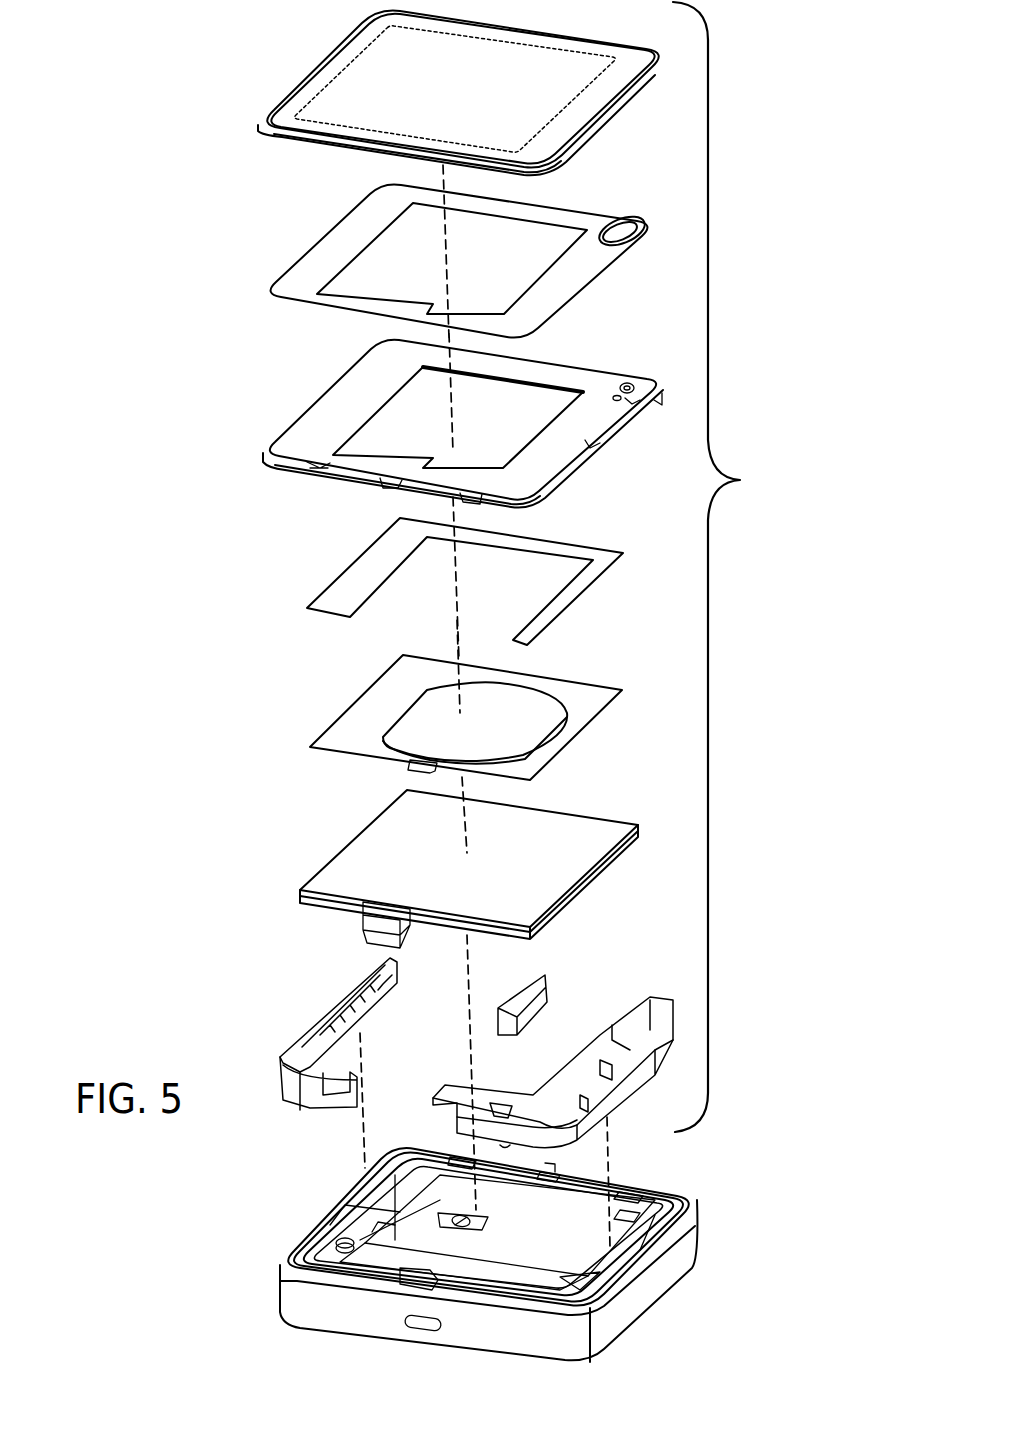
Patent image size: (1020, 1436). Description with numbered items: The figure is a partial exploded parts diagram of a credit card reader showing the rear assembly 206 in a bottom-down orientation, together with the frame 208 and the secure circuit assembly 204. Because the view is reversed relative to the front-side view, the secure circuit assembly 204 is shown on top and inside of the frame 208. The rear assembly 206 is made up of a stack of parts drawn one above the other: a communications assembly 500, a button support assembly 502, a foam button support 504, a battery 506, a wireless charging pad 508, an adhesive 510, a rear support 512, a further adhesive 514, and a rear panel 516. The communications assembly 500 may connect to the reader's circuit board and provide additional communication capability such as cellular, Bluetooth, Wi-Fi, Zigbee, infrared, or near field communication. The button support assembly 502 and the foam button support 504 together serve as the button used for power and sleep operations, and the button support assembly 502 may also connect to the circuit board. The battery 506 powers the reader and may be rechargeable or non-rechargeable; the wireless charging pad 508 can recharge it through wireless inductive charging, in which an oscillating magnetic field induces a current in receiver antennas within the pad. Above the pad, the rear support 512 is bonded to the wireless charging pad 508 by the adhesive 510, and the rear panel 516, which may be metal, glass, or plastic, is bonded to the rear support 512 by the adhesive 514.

The rear assembly 206 is at (733, 567).
The rear panel 516 is at (284, 118).
The adhesive 514 is at (293, 285).
The rear support 512 is at (293, 443).
The adhesive 510 is at (340, 598).
The wireless charging pad 508 is at (345, 730).
The battery 506 is at (340, 881).
The button support assembly 502 is at (303, 1034).
The foam button support 504 is at (540, 1000).
The communications assembly 500 is at (567, 1082).
The frame 208 is at (292, 1294).
The secure circuit assembly 204 is at (623, 1220).